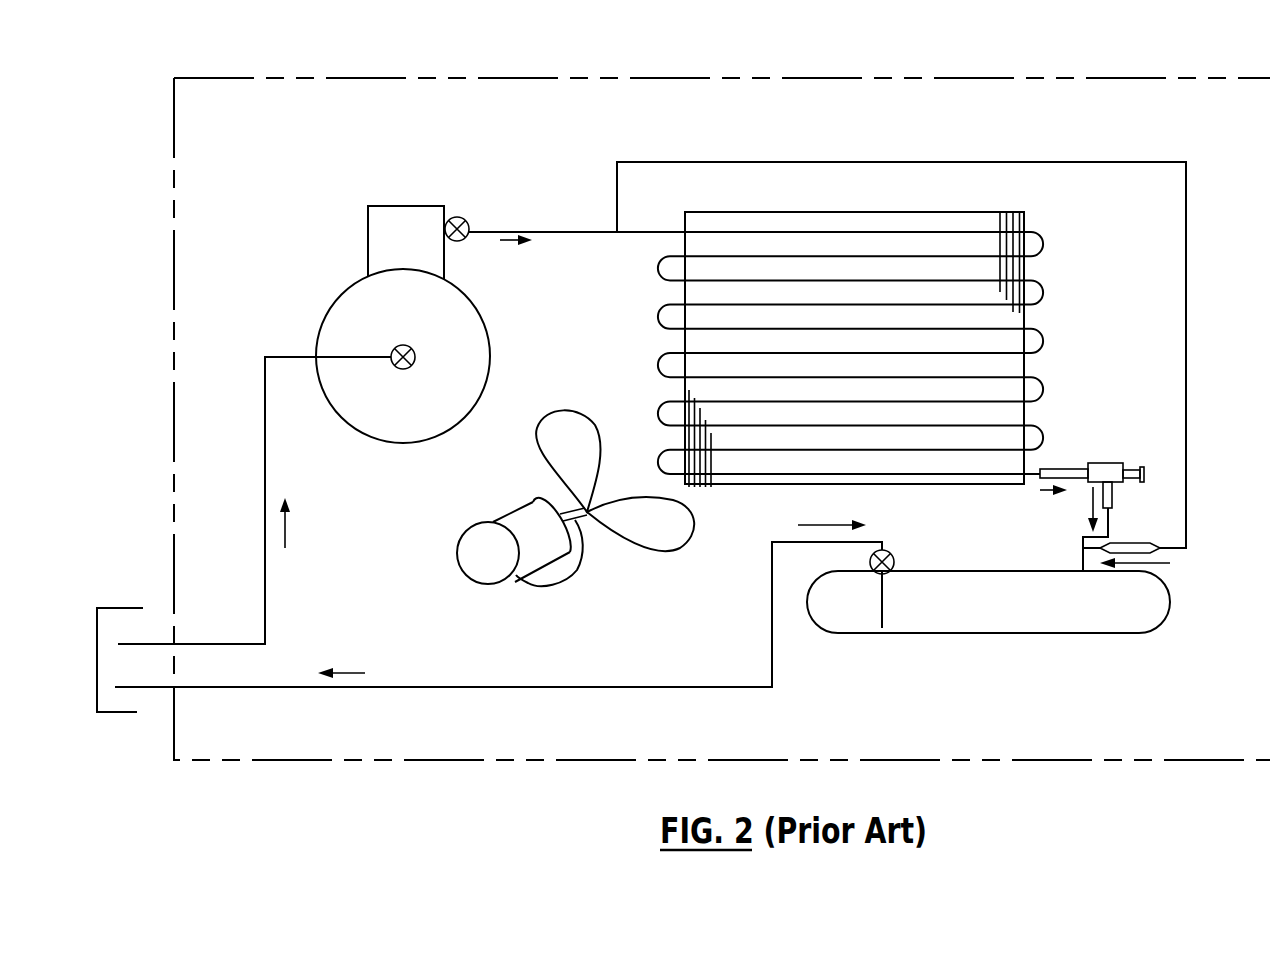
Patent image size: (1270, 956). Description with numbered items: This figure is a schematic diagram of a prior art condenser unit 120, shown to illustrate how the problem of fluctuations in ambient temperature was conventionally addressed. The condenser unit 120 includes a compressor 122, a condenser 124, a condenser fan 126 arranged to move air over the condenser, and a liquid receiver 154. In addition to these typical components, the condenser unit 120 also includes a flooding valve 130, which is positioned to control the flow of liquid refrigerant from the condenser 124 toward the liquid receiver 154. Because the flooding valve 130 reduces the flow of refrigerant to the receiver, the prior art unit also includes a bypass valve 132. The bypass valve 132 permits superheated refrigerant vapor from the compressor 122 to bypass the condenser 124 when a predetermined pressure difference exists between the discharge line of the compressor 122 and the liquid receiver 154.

The condenser unit 120 is at (1106, 65).
The compressor 122 is at (342, 297).
The condenser 124 is at (1048, 285).
The condenser fan 126 is at (573, 572).
The flooding valve 130 is at (1117, 460).
The bypass valve 132 is at (1143, 543).
The liquid receiver 154 is at (895, 625).